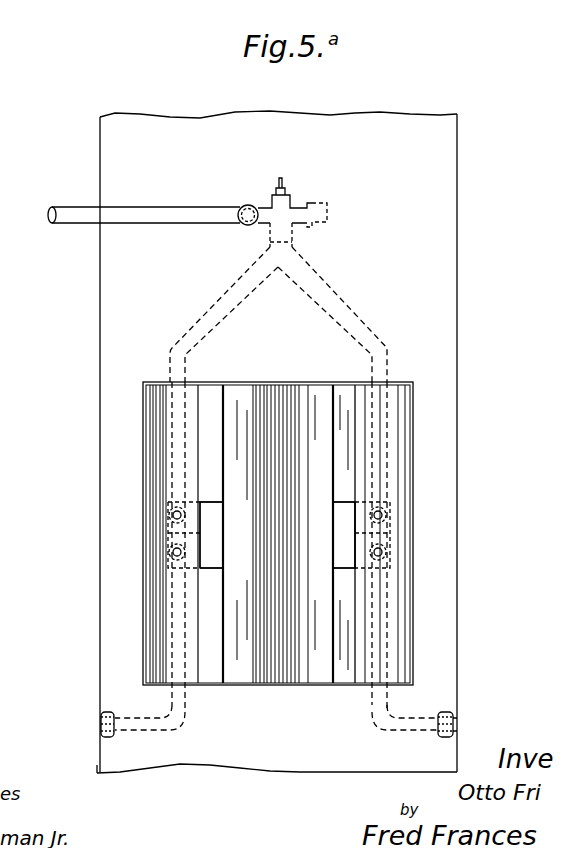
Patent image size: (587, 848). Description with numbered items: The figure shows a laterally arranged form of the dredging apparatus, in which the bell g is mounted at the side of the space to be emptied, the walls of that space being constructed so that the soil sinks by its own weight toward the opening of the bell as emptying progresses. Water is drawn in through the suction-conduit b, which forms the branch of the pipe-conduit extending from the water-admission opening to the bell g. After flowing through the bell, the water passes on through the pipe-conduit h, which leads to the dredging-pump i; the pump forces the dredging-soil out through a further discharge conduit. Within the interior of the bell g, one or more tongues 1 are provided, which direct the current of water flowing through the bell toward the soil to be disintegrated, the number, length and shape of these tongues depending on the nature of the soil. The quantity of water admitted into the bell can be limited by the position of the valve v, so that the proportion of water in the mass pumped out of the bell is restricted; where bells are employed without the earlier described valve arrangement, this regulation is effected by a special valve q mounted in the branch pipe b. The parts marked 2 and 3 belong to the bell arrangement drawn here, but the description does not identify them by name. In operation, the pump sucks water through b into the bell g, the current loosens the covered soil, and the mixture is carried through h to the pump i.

The valve v is at (172, 212).
The dredging-pump i is at (298, 210).
The pipe-conduit h is at (220, 307).
The suction-conduit b is at (152, 732).
The special valve q is at (443, 737).
The bell g is at (215, 570).
The tongues 1 is at (200, 533).
The chamber wall 2 is at (213, 592).
The chamber end 3 is at (328, 577).